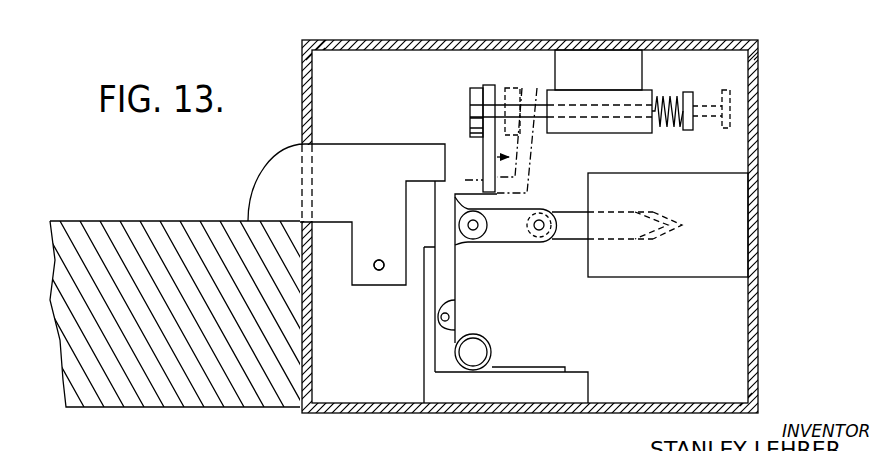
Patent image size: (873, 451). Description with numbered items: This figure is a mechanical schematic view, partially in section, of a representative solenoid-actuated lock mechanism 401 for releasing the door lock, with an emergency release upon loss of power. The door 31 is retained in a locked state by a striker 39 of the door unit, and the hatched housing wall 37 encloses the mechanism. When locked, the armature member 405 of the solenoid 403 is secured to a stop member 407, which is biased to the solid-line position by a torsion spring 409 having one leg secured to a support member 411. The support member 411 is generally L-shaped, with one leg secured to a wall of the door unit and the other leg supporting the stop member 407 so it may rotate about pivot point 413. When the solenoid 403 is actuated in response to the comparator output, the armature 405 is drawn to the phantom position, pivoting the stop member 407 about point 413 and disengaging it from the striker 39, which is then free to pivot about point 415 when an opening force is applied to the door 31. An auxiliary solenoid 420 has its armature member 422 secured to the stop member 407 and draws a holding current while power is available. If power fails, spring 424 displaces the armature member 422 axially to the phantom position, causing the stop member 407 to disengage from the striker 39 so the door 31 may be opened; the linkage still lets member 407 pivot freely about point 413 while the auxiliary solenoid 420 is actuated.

The housing wall 37 is at (408, 43).
The door 31 is at (161, 393).
The striker 39 is at (373, 196).
The solenoid-actuated lock mechanism 401 is at (763, 249).
The solenoid 403 is at (727, 208).
The armature member 405 is at (570, 232).
The stop member 407 is at (444, 266).
The torsion spring 409 is at (490, 343).
The support member 411 is at (578, 388).
The pivot point 413 is at (441, 318).
The pivot point 415 is at (380, 271).
The auxiliary solenoid 420 is at (648, 92).
The armature member 422 is at (498, 110).
The spring 424 is at (665, 120).